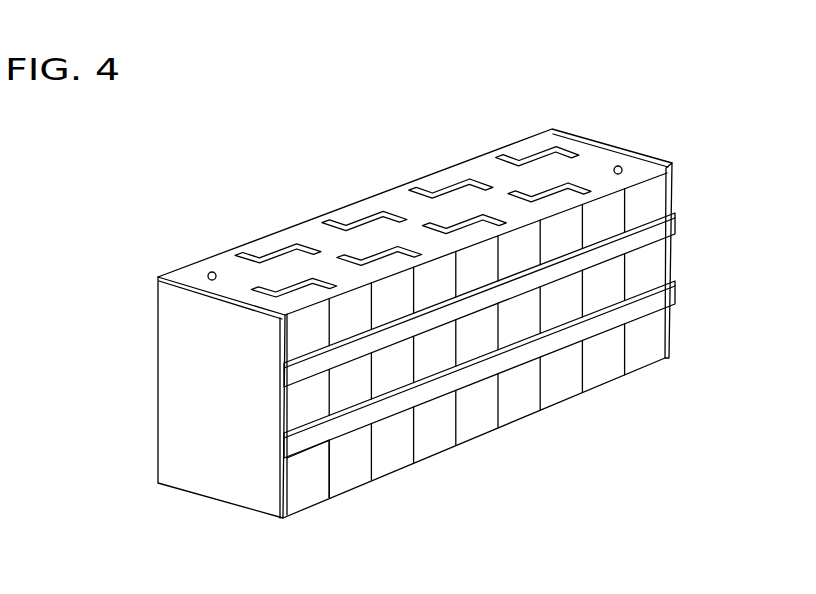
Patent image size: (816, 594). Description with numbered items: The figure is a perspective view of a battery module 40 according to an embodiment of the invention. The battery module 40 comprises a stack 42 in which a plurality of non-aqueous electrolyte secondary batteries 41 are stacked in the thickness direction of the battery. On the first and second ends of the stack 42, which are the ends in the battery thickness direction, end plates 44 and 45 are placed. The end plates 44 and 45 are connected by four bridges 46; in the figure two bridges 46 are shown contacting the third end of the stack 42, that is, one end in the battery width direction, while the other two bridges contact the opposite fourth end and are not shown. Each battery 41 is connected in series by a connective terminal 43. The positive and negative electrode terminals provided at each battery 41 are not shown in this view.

The battery module 40 is at (421, 164).
The non-aqueous electrolyte secondary battery 41 is at (296, 487).
The stack 42 is at (680, 370).
The connective terminal 43 is at (283, 256).
The end plate 44 is at (174, 402).
The end plate 45 is at (674, 192).
The bridge 46 is at (661, 296).